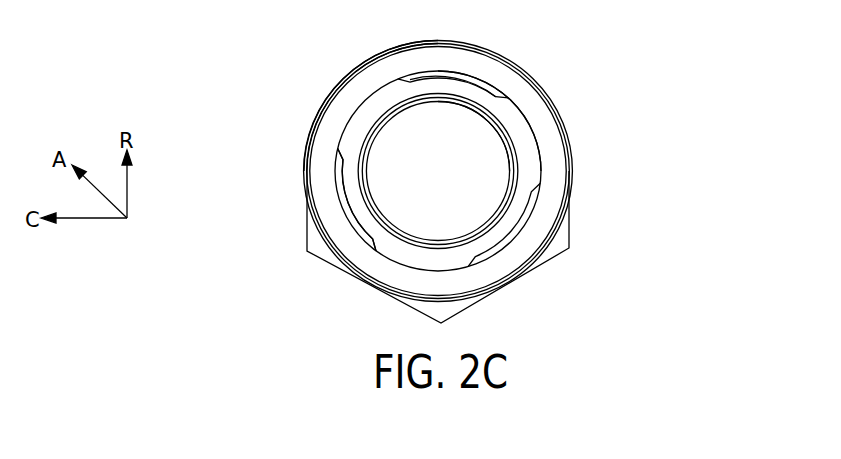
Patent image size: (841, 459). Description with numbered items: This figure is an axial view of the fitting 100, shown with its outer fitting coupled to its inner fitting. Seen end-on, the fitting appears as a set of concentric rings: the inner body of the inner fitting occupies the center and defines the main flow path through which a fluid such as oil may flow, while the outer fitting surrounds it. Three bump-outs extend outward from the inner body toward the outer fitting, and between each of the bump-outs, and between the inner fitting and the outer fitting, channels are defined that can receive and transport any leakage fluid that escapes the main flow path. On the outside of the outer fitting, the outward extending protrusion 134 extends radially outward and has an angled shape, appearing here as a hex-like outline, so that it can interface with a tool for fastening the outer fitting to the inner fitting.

The fitting 100 is at (245, 180).
The outward extending protrusion 134 is at (571, 226).